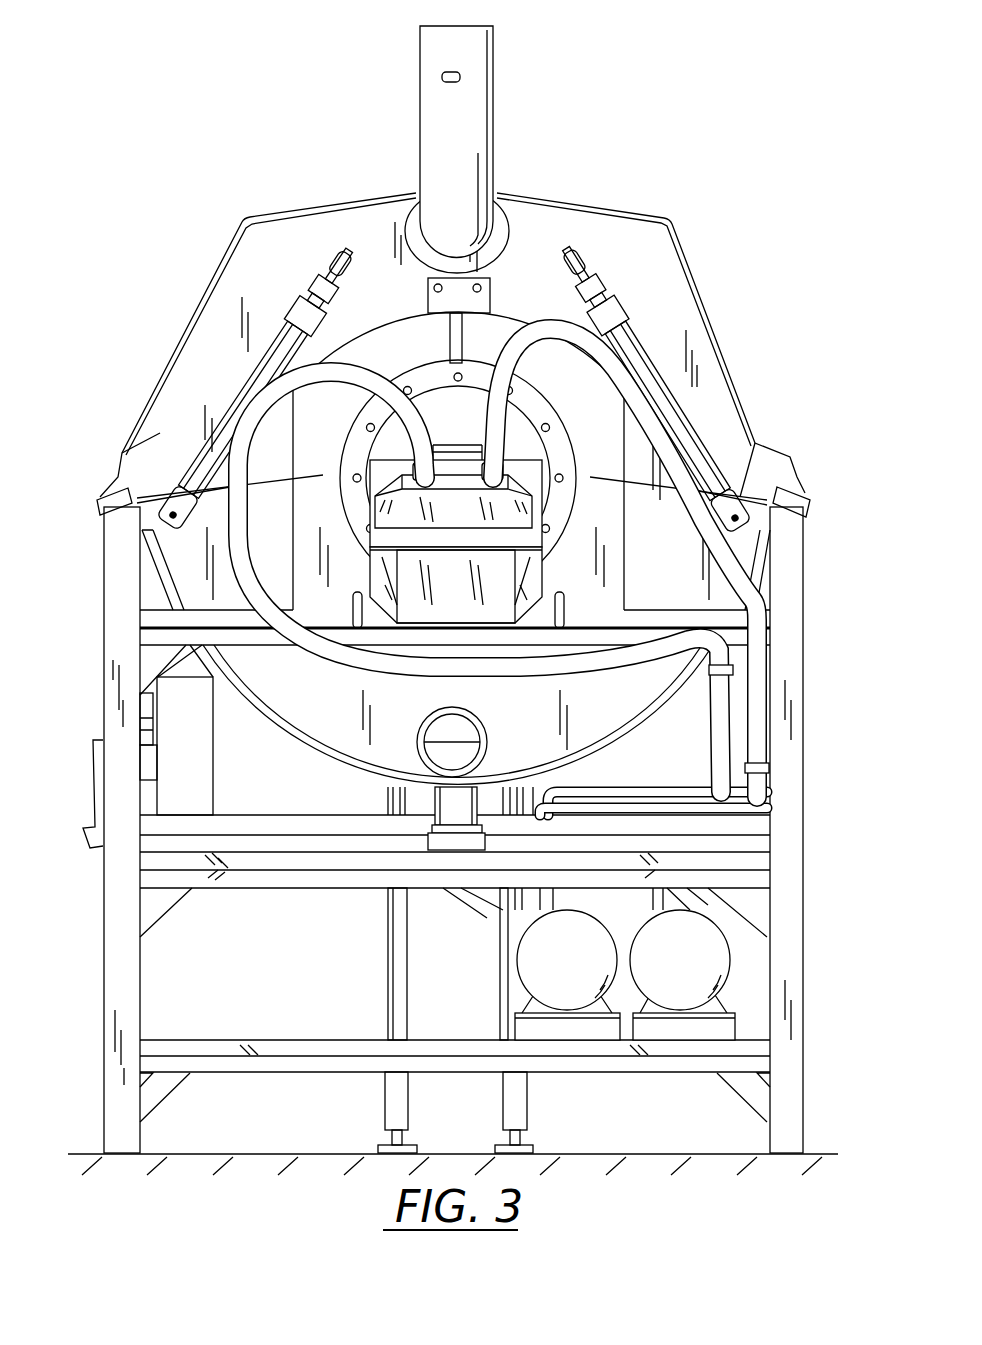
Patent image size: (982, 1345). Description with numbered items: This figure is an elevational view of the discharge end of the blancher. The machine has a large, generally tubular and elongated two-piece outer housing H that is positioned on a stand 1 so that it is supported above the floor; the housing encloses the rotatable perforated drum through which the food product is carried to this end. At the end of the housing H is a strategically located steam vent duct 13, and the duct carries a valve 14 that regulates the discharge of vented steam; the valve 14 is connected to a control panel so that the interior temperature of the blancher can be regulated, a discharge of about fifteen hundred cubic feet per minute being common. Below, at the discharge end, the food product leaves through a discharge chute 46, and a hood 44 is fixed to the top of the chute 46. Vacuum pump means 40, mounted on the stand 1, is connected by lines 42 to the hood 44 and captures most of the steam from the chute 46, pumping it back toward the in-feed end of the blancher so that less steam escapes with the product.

The stand 1 is at (803, 852).
The steam vent duct 13 is at (493, 132).
The valve 14 is at (460, 77).
The outer housing H is at (703, 303).
The lines 42 is at (320, 368).
The hood 44 is at (503, 513).
The discharge chute 46 is at (487, 597).
The vacuum pump means 40 is at (533, 965).